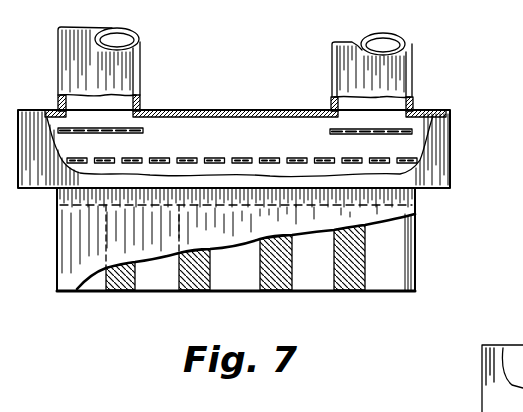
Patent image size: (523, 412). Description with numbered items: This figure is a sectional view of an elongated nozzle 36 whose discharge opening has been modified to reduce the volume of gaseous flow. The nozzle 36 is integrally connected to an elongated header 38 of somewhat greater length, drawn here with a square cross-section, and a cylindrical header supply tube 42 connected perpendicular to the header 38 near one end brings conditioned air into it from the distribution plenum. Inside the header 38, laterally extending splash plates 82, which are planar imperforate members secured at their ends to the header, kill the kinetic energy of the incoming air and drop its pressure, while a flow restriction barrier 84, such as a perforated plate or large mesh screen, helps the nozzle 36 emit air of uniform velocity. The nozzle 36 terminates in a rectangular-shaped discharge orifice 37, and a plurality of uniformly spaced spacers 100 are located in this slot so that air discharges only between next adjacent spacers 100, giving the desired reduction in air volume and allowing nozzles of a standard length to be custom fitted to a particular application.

The elongated nozzle 36 is at (458, 200).
The discharge orifice 37 is at (321, 292).
The header 38 is at (447, 140).
The header supply tube 42 is at (400, 70).
The splash plate 82 is at (125, 133).
The flow restriction barrier 84 is at (277, 158).
The spacer 100 is at (196, 292).